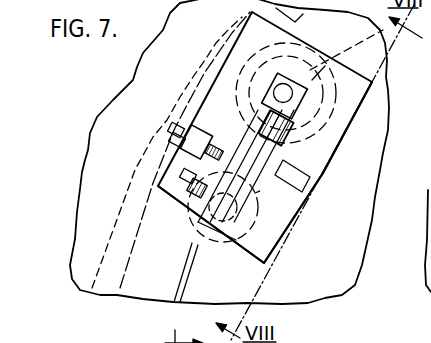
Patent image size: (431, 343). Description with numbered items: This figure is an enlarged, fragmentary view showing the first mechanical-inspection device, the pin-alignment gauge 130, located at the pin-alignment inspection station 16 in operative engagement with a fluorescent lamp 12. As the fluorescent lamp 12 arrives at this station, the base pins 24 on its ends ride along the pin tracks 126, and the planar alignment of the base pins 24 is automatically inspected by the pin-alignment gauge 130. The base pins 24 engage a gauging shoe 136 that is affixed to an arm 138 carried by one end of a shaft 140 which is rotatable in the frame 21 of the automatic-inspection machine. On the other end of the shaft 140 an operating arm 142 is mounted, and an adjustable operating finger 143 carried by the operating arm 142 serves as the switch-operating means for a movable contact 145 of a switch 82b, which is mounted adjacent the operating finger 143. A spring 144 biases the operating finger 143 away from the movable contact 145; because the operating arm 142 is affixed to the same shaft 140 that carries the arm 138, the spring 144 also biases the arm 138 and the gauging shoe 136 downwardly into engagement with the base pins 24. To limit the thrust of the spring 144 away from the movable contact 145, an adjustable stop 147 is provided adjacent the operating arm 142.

The frame 21 is at (78, 212).
The pin-alignment inspection station 16 is at (147, 157).
The pin-alignment gauge 130 is at (290, 240).
The switch 82b is at (288, 217).
The shaft 140 is at (300, 93).
The arm 138 is at (288, 161).
The spring 144 is at (296, 126).
The operating arm 142 is at (243, 134).
The gauging shoe 136 is at (255, 193).
The adjustable stop 147 is at (170, 127).
The operating finger 143 is at (178, 176).
The base pins 24 is at (190, 212).
The fluorescent lamp 12 is at (186, 228).
The pin tracks 126 is at (196, 266).
The movable contact 145 is at (232, 249).